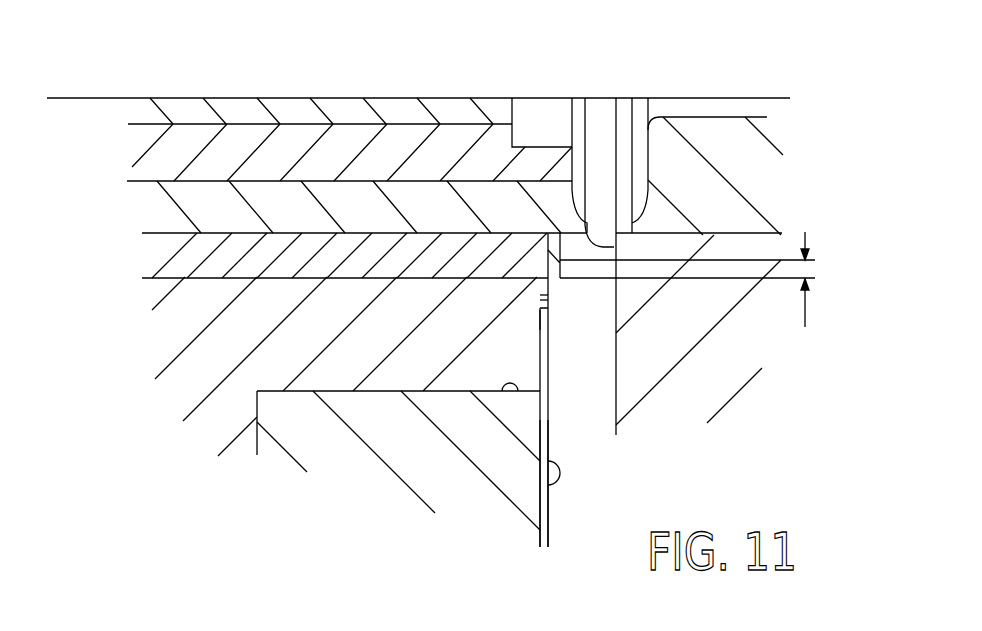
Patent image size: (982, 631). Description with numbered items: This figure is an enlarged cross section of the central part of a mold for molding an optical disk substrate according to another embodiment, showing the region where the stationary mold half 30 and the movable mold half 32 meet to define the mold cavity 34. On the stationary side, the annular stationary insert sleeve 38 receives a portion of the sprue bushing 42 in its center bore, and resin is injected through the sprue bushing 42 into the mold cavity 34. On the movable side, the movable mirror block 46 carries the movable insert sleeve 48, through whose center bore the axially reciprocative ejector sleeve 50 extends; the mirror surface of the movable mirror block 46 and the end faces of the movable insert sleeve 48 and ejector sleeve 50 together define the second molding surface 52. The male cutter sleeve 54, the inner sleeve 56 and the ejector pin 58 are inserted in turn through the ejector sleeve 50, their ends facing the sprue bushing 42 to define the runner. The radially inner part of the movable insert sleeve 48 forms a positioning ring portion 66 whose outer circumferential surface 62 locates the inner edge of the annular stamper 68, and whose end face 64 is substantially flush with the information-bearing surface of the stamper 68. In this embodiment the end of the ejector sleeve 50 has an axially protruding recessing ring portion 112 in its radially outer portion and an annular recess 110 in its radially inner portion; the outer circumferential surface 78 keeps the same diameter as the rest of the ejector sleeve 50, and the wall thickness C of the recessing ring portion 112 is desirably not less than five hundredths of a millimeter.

The stationary mold half 30 is at (575, 301).
The movable mold half 32 is at (418, 265).
The mold cavity 34 is at (603, 385).
The stationary insert sleeve 38 is at (693, 312).
The sprue bushing 42 is at (757, 208).
The movable mirror block 46 is at (297, 443).
The movable insert sleeve 48 is at (203, 343).
The ejector sleeve 50 is at (160, 253).
The second molding surface 52 is at (552, 487).
The male cutter sleeve 54 is at (157, 212).
The inner sleeve 56 is at (160, 143).
The ejector pin 58 is at (193, 110).
The outer circumferential surface 62 is at (540, 315).
The end face 64 is at (540, 298).
The positioning ring portion 66 is at (550, 300).
The annular stamper 68 is at (560, 500).
The outer circumferential surface 78 is at (547, 300).
The annular recess 110 is at (600, 217).
The recessing ring portion 112 is at (560, 267).
The wall thickness C is at (820, 279).